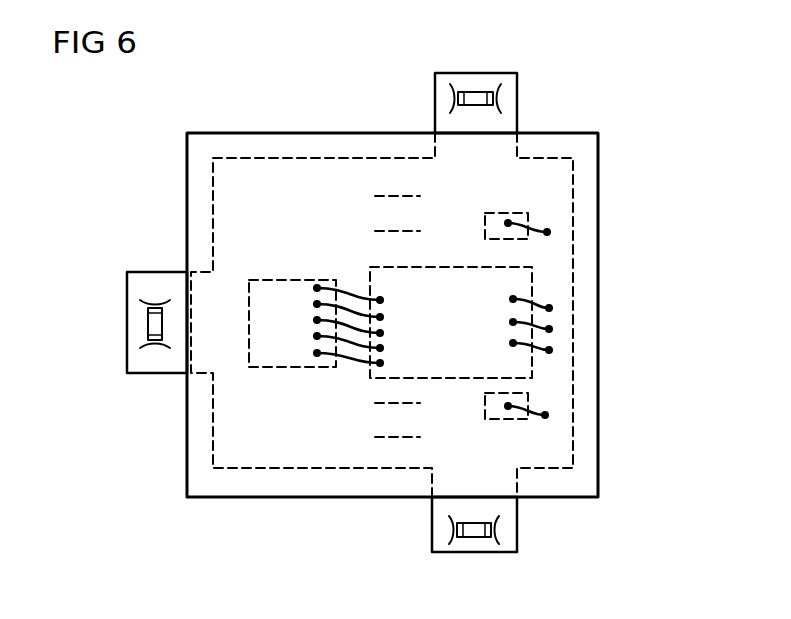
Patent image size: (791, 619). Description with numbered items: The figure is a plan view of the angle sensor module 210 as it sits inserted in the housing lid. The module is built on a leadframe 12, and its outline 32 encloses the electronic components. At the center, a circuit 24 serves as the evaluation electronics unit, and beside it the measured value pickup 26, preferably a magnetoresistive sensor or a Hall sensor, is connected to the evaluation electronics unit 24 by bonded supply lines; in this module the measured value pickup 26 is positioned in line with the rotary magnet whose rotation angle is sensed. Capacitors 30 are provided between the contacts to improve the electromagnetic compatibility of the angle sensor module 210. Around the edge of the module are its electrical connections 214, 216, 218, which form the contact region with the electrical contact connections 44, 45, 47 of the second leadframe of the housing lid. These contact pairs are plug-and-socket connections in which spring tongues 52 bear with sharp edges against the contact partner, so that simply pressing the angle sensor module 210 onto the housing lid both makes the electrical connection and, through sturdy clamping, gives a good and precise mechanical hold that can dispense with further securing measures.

The angle sensor module 210 is at (599, 244).
The housing 32 is at (186, 157).
The leadframe 12 is at (312, 458).
The measured value pickup 26 is at (283, 280).
The circuit 24 is at (443, 267).
The capacitors 30 is at (505, 213).
The electrical connection 218 is at (518, 103).
The electrical contact connection 47 is at (475, 98).
The electrical connection 214 is at (127, 362).
The electrical contact connection 44 is at (148, 325).
The electrical connection 216 is at (518, 523).
The electrical contact connection 45 is at (478, 540).
The spring tongues 52 is at (452, 528).